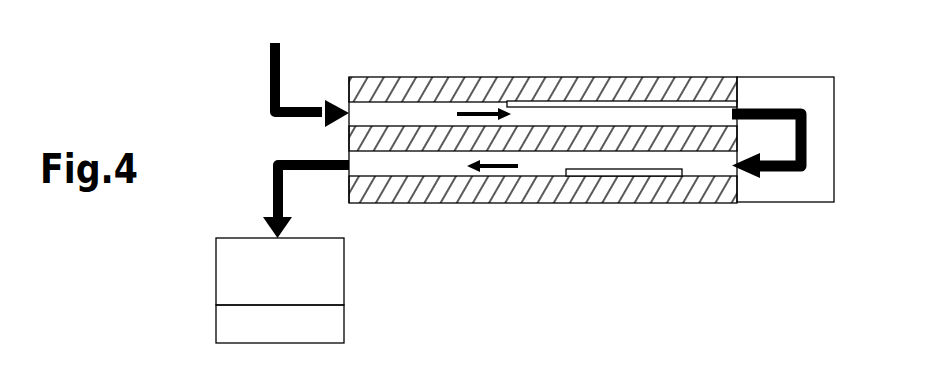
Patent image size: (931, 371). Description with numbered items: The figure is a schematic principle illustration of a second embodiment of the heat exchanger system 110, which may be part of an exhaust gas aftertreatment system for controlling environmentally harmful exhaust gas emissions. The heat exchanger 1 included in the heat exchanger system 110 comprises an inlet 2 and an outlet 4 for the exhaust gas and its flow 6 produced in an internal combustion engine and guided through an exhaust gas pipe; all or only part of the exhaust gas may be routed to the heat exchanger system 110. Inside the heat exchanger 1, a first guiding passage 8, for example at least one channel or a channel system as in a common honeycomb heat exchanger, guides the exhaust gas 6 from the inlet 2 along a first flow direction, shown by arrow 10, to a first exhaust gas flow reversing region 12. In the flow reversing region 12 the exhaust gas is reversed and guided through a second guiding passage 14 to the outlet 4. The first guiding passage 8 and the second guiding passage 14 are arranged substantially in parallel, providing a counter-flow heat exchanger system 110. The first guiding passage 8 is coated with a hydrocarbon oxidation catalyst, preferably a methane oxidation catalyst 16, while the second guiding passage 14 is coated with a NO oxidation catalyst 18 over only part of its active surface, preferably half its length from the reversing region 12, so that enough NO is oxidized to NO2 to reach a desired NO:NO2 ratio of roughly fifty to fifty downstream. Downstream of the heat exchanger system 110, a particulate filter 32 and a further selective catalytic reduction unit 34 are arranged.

The heat exchanger system 110 is at (559, 24).
The heat exchanger 1 is at (702, 75).
The inlet 2 is at (348, 101).
The outlet 4 is at (348, 180).
The exhaust gas flow 6 is at (277, 92).
The first guiding passage 8 is at (430, 115).
The first flow direction arrow 10 is at (492, 110).
The first exhaust gas flow reversing region 12 is at (818, 177).
The second guiding passage 14 is at (410, 167).
The methane oxidation catalyst 16 is at (653, 105).
The NO oxidation catalyst 18 is at (653, 172).
The particulate filter 32 is at (338, 268).
The further selective catalytic reduction unit 34 is at (338, 322).